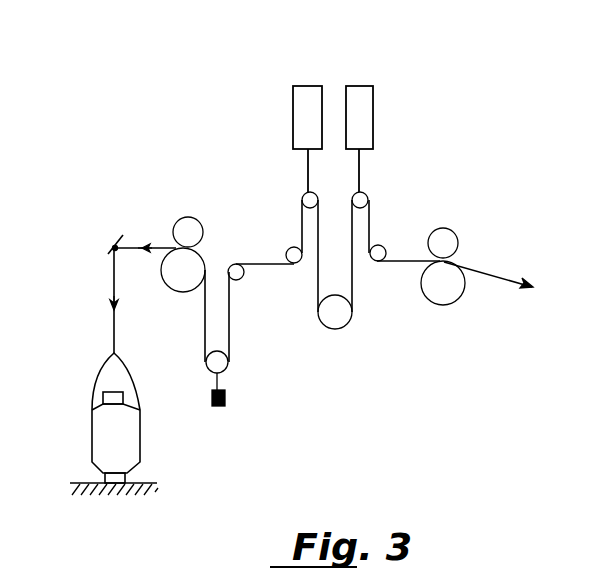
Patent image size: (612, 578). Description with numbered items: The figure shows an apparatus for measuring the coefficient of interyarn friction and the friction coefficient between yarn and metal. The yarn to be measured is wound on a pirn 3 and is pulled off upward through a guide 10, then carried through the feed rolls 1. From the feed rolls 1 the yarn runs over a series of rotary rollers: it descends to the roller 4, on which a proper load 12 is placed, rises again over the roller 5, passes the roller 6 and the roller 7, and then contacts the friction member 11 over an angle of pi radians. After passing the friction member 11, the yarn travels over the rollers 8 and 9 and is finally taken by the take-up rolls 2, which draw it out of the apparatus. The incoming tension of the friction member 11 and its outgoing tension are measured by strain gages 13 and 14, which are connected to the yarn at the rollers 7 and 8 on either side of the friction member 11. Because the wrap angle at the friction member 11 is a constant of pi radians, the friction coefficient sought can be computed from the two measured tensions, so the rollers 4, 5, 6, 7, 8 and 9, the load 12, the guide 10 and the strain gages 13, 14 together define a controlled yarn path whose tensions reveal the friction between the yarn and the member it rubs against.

The feed rolls 1 is at (186, 224).
The take-up rolls 2 is at (444, 237).
The pirn of yarn 3 is at (97, 432).
The rotary roller 4 is at (224, 365).
The rotary roller 5 is at (242, 280).
The rotary roller 6 is at (292, 264).
The rotary roller 7 is at (302, 197).
The rotary roller 8 is at (368, 196).
The rotary roller 9 is at (381, 262).
The guide 10 is at (113, 244).
The friction member 11 is at (342, 318).
The load 12 is at (226, 402).
The strain gage 13 is at (305, 92).
The strain gage 14 is at (360, 93).